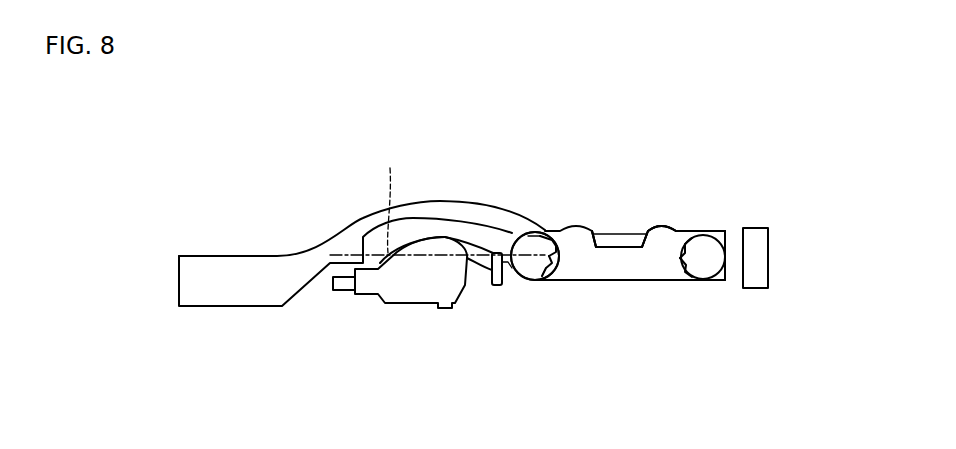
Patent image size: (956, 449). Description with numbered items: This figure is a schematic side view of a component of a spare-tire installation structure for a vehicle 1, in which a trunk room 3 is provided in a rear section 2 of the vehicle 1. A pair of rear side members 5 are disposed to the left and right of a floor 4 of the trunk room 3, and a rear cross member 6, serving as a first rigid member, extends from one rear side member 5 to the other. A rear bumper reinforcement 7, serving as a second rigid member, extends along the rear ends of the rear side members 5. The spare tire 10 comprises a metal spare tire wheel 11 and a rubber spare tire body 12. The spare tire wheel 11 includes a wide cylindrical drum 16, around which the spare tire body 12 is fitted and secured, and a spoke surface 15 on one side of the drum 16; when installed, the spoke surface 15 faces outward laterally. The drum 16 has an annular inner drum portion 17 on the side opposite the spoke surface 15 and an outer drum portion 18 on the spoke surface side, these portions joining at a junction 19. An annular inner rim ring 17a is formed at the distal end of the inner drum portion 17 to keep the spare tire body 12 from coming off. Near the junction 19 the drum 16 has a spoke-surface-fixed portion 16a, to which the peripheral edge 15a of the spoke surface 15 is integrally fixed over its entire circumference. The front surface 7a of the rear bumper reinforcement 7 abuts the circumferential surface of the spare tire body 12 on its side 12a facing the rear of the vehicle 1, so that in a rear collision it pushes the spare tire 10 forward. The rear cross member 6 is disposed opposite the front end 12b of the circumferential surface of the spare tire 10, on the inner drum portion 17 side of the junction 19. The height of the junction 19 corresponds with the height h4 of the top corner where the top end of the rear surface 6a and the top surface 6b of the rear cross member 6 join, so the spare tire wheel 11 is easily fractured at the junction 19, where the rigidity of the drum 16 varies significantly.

The vehicle 1 is at (207, 248).
The height of top corner h4 is at (391, 199).
The rear cross member 6 is at (493, 251).
The rear surface 6a is at (512, 265).
The top surface 6b is at (500, 253).
The front end 12b is at (508, 248).
The junction 19 is at (535, 245).
The spoke surface 15 is at (572, 228).
The peripheral edge 15a is at (683, 252).
The drum 16 is at (515, 378).
The spoke-surface-fixed portion 16a is at (679, 266).
The inner drum portion 17 is at (553, 272).
The inner rim ring 17a is at (545, 274).
The outer drum portion 18 is at (567, 270).
The trunk room 3 is at (604, 193).
The spare tire 10 is at (698, 147).
The spare tire wheel 11 is at (662, 219).
The spare tire body 12 is at (697, 223).
The floor 4 is at (700, 230).
The rear side member 5 is at (720, 232).
The side facing the rear 12a is at (731, 250).
The rear bumper reinforcement 7 is at (770, 235).
The front surface 7a is at (731, 254).
The rear section 2 is at (725, 310).